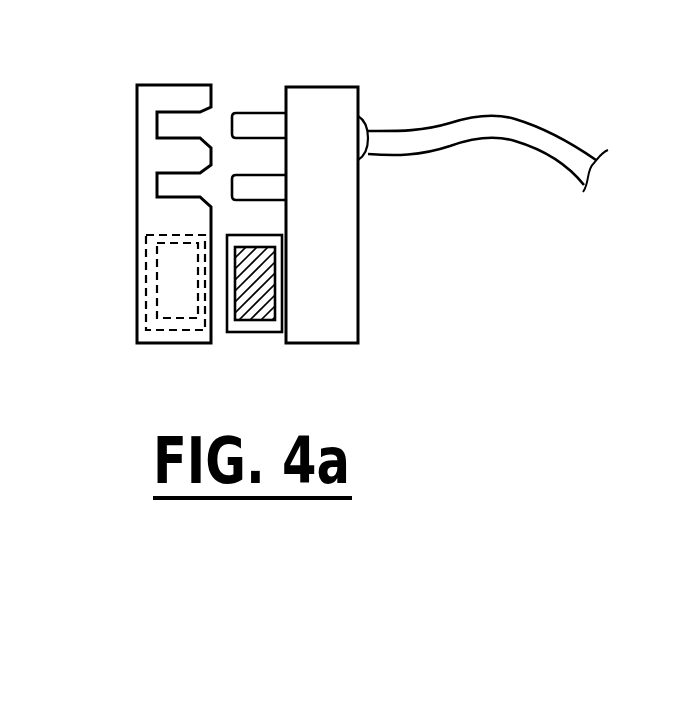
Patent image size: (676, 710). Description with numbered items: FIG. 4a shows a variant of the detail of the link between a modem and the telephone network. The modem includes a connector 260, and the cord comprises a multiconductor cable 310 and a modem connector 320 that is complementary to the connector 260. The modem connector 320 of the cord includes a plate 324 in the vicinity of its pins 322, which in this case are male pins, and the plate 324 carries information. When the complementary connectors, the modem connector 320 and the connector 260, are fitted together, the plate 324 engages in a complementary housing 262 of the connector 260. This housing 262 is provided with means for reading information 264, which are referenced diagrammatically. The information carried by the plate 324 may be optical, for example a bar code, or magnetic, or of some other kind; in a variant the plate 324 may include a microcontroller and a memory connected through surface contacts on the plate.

The connector 260 is at (159, 85).
The complementary housing 262 is at (147, 327).
The means for reading information 264 is at (157, 262).
The multiconductor cable 310 is at (485, 128).
The modem connector 320 is at (336, 87).
The pins 322 is at (241, 111).
The plate 324 is at (258, 332).